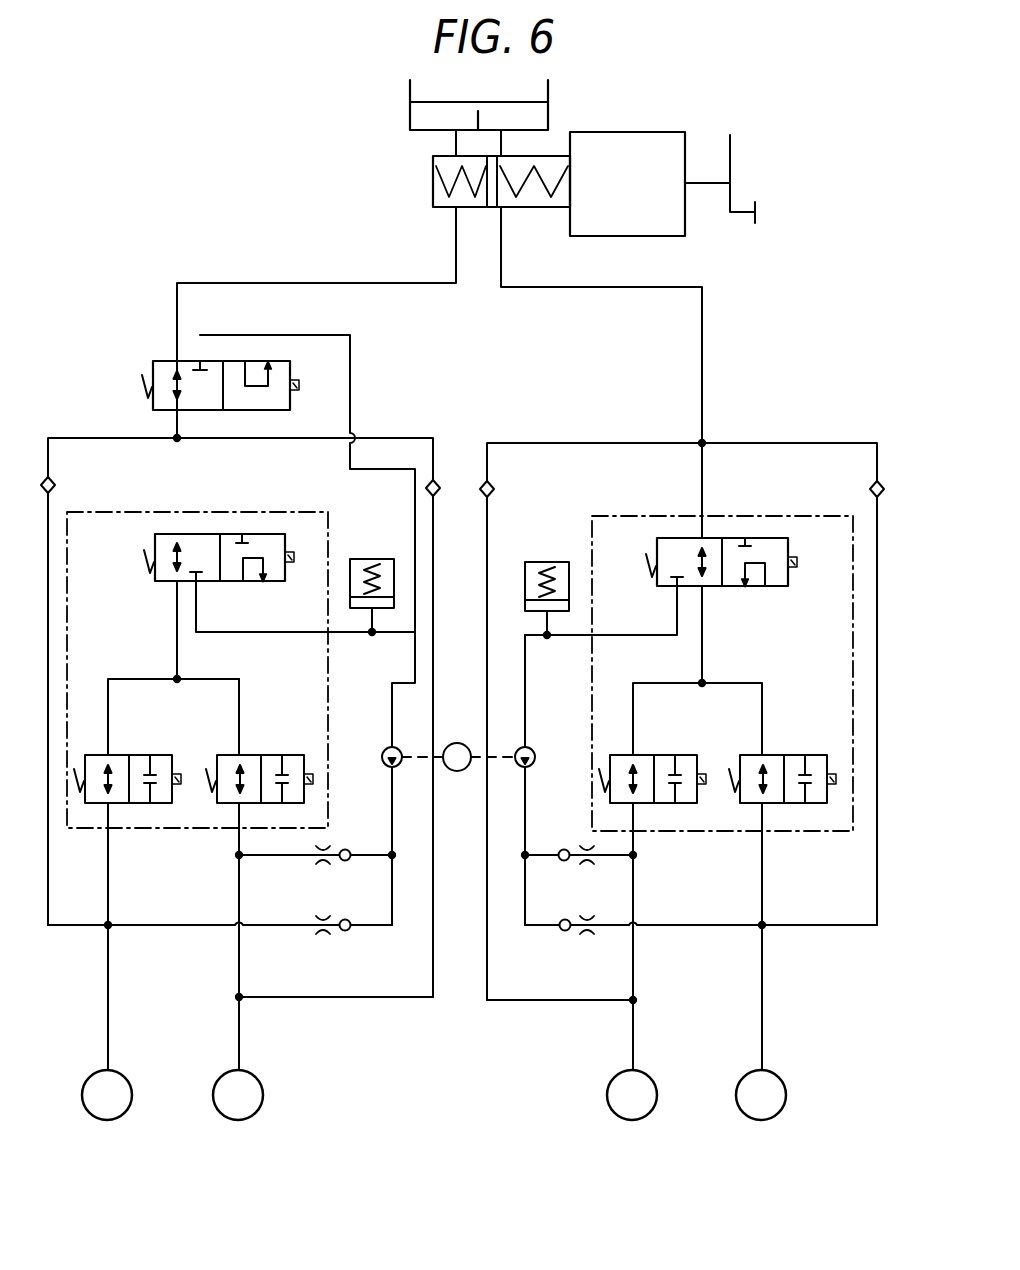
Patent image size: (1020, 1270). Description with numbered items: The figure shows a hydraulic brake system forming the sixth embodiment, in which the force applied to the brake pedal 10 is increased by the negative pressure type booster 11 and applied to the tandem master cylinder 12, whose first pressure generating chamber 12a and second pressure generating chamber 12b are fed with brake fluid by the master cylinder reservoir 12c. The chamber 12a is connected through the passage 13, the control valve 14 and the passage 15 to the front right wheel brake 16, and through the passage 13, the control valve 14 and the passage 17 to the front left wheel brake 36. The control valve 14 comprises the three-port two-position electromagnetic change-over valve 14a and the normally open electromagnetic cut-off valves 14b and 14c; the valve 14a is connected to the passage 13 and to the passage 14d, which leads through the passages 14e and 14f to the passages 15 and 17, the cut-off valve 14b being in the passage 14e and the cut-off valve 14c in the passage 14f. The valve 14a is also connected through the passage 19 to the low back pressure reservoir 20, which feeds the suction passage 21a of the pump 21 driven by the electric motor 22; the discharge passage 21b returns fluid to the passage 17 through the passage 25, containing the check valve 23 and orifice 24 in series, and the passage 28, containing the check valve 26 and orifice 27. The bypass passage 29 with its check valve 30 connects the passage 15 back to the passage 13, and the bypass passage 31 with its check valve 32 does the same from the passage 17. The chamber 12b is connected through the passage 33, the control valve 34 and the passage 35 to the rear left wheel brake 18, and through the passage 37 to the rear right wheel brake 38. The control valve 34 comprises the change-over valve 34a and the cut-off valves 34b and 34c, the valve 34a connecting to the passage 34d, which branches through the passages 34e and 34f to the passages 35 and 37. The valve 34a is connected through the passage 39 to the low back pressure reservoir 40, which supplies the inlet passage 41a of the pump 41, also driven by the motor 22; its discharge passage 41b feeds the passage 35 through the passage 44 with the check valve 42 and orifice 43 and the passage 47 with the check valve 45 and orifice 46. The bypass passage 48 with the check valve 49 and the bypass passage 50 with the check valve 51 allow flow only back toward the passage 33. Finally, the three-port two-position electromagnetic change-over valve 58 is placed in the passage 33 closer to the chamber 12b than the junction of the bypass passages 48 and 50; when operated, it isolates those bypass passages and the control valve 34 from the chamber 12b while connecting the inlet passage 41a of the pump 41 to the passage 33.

The brake pedal 10 is at (735, 150).
The negative pressure type booster 11 is at (640, 132).
The tandem master cylinder 12 is at (433, 172).
The first pressure generating chamber 12a is at (524, 207).
The second pressure generating chamber 12b is at (436, 198).
The master cylinder reservoir 12c is at (410, 120).
The passage 13 is at (655, 287).
The control valve 14 is at (760, 512).
The three-port two-position type electromagnetic change-over valve 14a is at (775, 586).
The normally open electromagnetic cut-off valve 14b is at (795, 755).
The normally open electromagnetic cut-off valve 14c is at (660, 755).
The passage 14d is at (702, 642).
The passage 14e is at (762, 692).
The passage 14f is at (650, 683).
The passage 15 is at (762, 890).
The front right wheel brake 16 is at (785, 1085).
The passage 17 is at (633, 890).
The rear left wheel brake 18 is at (125, 1080).
The passage 19 is at (612, 635).
The low back pressure reservoir 20 is at (547, 562).
The pump 21 is at (536, 755).
The suction passage 21a is at (527, 690).
The discharge passage 21b is at (527, 798).
The electric motor 22 is at (460, 743).
The check valve 23 is at (565, 932).
The orifice 24 is at (590, 934).
The passage 25 is at (537, 930).
The check valve 26 is at (563, 862).
The orifice 27 is at (588, 863).
The passage 28 is at (535, 855).
The bypass passage 29 is at (760, 443).
The check valve 30 is at (870, 489).
The bypass passage 31 is at (597, 443).
The check valve 32 is at (494, 489).
The passage 33 is at (300, 283).
The control valve 34 is at (215, 512).
The three-port two-position type electromagnetic change-over valve 34a is at (155, 548).
The normally open electromagnetic cut-off valve 34b is at (140, 755).
The normally open electromagnetic cut-off valve 34c is at (270, 755).
The passage 34d is at (177, 640).
The passage 34e is at (130, 679).
The passage 34f is at (239, 710).
The passage 35 is at (108, 895).
The front left wheel brake 36 is at (655, 1088).
The passage 37 is at (239, 895).
The rear right wheel brake 38 is at (258, 1082).
The passage 39 is at (290, 632).
The low back pressure reservoir 40 is at (365, 559).
The pump 41 is at (383, 750).
The inlet passage 41a is at (350, 370).
The discharge passage 41b is at (390, 800).
The check valve 42 is at (345, 932).
The orifice 43 is at (322, 935).
The passage 44 is at (375, 928).
The check valve 45 is at (345, 862).
The orifice 46 is at (322, 863).
The passage 47 is at (360, 855).
The bypass passage 48 is at (95, 438).
The check valve 49 is at (55, 485).
The bypass passage 50 is at (285, 438).
The check valve 51 is at (440, 488).
The three-port two-position type electromagnetic change-over valve 58 is at (160, 361).